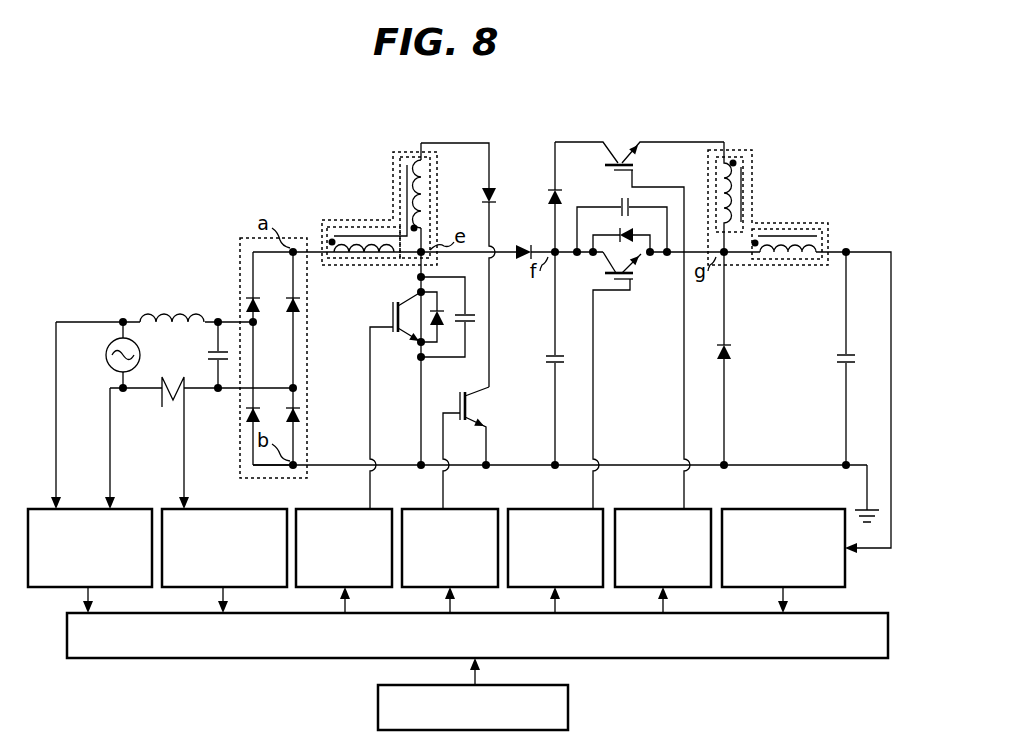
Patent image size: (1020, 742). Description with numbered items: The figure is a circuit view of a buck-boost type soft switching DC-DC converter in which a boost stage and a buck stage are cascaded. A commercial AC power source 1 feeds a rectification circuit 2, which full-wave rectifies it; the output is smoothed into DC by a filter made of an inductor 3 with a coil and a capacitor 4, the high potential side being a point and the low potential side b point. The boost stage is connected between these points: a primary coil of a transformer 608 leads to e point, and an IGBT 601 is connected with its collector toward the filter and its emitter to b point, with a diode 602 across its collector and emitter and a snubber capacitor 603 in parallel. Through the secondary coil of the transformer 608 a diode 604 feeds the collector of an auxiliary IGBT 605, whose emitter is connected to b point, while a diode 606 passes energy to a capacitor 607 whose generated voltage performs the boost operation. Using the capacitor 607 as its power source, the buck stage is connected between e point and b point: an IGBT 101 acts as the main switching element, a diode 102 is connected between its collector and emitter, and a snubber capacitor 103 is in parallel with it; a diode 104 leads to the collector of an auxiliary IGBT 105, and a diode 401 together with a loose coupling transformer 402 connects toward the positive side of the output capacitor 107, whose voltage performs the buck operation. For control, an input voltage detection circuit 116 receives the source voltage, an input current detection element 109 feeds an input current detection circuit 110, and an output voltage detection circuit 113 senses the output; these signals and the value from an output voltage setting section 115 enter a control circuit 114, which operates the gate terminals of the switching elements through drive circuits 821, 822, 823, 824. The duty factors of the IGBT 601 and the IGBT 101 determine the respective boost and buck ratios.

The commercial AC power source 1 is at (106, 355).
The rectification circuit 2 is at (240, 252).
The inductor 3 is at (173, 309).
The capacitor 4 is at (204, 355).
The IGBT 101 is at (640, 292).
The diode 102 is at (618, 230).
The snubber capacitor 103 is at (616, 200).
The diode 104 is at (549, 188).
The IGBT 105 is at (648, 155).
The capacitor 107 is at (832, 361).
The input current detection element 109 is at (166, 411).
The input current detection circuit 110 is at (228, 504).
The output voltage detection circuit 113 is at (790, 506).
The control circuit 114 is at (835, 614).
The output voltage setting section 115 is at (570, 706).
The input voltage detection circuit 116 is at (50, 588).
The diode 401 is at (732, 354).
The loose coupling transformer 402 is at (731, 154).
The IGBT 601 is at (392, 317).
The diode 602 is at (440, 303).
The snubber capacitor 603 is at (475, 308).
The diode 604 is at (486, 190).
The IGBT 605 is at (460, 406).
The diode 606 is at (524, 248).
The capacitor 607 is at (546, 352).
The transformer 608 is at (316, 221).
The drive circuit 821 is at (322, 505).
The drive circuit 822 is at (436, 505).
The drive circuit 823 is at (535, 505).
The drive circuit 824 is at (630, 505).